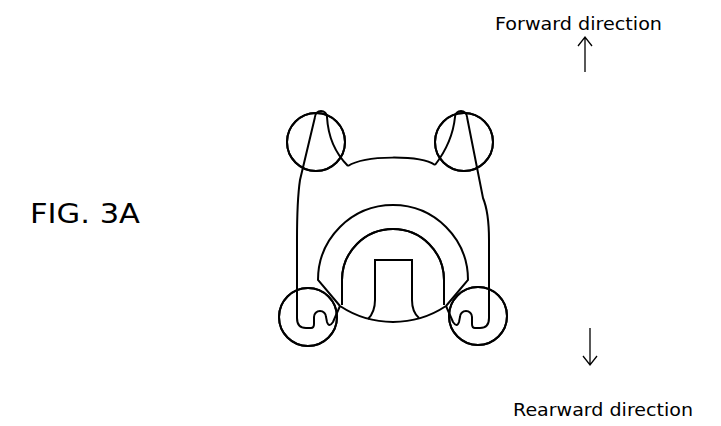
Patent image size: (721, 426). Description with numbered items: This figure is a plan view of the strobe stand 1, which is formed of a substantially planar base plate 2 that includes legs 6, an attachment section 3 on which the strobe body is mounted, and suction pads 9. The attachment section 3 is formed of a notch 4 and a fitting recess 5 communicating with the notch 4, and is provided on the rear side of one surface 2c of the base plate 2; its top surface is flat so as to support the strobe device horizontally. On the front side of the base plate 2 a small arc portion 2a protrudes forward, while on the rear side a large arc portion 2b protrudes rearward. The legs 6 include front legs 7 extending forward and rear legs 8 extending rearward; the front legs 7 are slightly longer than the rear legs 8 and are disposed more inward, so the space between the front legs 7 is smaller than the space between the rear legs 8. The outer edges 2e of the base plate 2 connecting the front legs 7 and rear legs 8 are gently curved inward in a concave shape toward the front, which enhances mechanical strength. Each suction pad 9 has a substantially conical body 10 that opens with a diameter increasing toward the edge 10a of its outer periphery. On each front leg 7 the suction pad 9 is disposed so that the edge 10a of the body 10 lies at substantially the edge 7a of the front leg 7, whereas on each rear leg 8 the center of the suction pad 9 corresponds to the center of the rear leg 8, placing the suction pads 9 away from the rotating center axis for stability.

The strobe stand 1 is at (170, 98).
The base plate 2 is at (402, 230).
The small arc portion 2a is at (403, 156).
The large arc portion 2b is at (432, 320).
The one surface 2c is at (467, 223).
The outer edges 2e is at (295, 207).
The attachment section 3 is at (353, 300).
The notch 4 is at (391, 308).
The fitting recess 5 is at (389, 262).
The legs 6 is at (293, 245).
The front legs 7 is at (320, 132).
The edge of front leg 7a is at (326, 114).
The rear legs 8 is at (309, 318).
The suction pads 9 is at (305, 145).
The body 10 is at (391, 212).
The edge of the outer periphery 10a is at (295, 125).